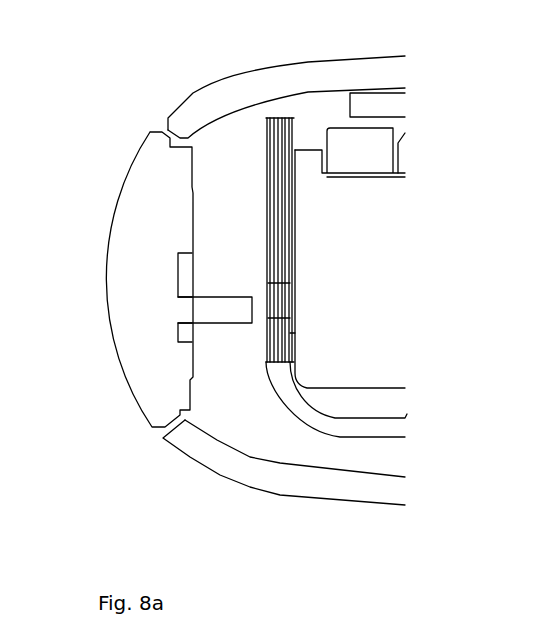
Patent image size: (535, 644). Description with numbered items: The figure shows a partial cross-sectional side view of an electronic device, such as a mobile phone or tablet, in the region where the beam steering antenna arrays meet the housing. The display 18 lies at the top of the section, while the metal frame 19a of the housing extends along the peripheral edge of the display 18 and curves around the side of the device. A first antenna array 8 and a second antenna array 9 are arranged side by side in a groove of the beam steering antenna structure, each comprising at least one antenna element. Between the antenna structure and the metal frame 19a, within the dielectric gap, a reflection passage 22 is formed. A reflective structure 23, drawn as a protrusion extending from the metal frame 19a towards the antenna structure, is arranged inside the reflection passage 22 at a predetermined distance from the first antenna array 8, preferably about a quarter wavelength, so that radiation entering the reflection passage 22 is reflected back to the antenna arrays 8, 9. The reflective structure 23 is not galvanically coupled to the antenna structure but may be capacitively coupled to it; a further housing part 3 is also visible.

The housing part 3 is at (341, 158).
The first antenna array 8 is at (229, 199).
The second antenna array 9 is at (277, 192).
The display 18 is at (386, 102).
The metal frame 19a is at (162, 353).
The reflection passage 22 is at (237, 252).
The reflective structure 23 is at (221, 309).